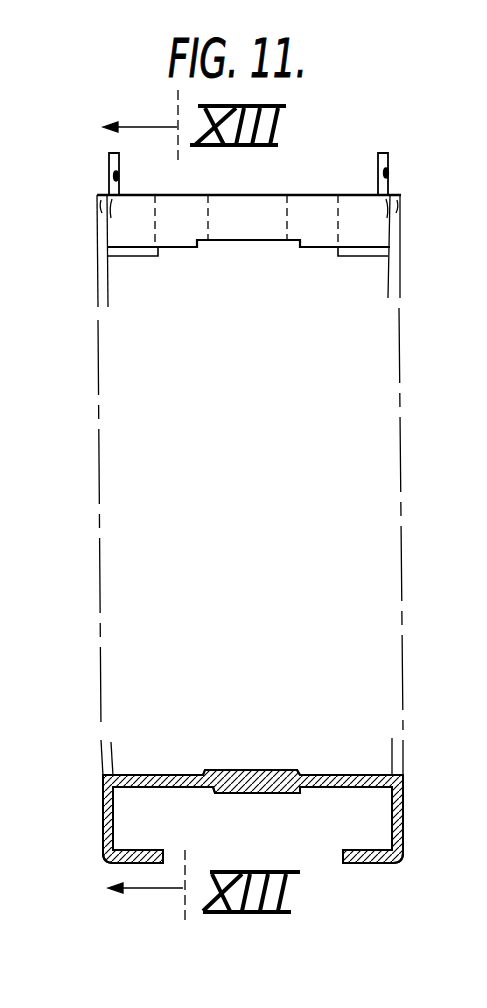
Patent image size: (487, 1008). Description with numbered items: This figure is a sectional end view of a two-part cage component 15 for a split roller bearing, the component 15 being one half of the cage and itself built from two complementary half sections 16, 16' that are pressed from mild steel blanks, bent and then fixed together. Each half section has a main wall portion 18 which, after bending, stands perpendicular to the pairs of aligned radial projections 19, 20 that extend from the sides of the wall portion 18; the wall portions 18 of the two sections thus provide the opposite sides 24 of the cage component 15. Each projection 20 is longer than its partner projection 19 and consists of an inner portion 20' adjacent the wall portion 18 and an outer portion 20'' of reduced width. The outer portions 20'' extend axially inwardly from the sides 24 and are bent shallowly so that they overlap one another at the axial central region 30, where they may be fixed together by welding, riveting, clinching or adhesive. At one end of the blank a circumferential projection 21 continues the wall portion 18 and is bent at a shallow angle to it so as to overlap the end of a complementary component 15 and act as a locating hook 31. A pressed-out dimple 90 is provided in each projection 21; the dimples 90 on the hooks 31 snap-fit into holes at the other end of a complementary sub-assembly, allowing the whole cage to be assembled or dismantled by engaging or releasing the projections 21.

The half-cage component 15 is at (88, 486).
The half section 16 is at (438, 799).
The half section 16' is at (62, 791).
The main wall portion 18 is at (103, 807).
The radial projection 19 is at (132, 864).
The radial projection 20 is at (253, 816).
The inner portion 20' is at (159, 742).
The outer portion 20'' is at (267, 826).
The circumferential projection 21 is at (107, 152).
The side 24 is at (404, 843).
The overlap region 30 is at (260, 760).
The locating hook 31 is at (107, 186).
The pressed-out dimple 90 is at (110, 176).